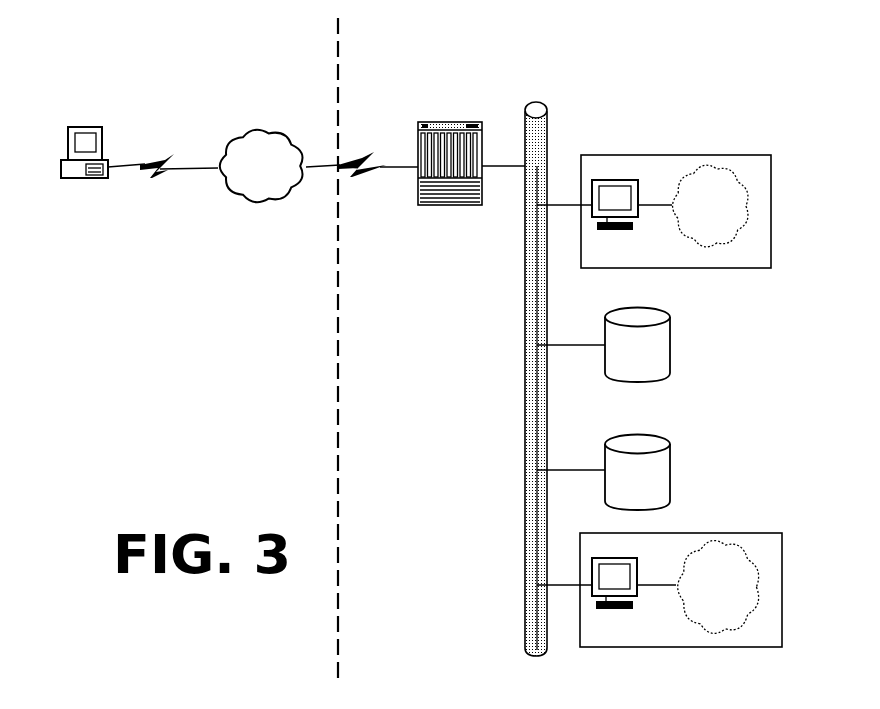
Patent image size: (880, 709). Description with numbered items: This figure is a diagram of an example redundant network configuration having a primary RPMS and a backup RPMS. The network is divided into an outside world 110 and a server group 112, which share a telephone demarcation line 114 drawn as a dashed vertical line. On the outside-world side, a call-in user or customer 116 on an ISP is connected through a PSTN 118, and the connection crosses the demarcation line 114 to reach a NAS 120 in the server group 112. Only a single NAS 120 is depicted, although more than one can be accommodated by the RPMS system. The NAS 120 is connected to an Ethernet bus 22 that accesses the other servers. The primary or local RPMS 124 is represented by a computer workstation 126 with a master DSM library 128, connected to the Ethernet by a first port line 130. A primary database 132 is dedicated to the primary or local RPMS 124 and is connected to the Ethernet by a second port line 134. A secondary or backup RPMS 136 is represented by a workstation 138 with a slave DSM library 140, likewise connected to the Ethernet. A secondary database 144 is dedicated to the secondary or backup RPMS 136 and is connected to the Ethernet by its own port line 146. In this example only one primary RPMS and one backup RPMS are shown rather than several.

The outside world 110 is at (210, 82).
The server group 112 is at (628, 80).
The telephone demarcation line 114 is at (338, 334).
The call-in user or customer 116 is at (102, 126).
The PSTN 118 is at (283, 205).
The NAS 120 is at (414, 196).
The network bus 22 is at (525, 403).
The primary or local RPMS 124 is at (712, 155).
The computer workstation 126 is at (640, 197).
The master DSM library 128 is at (734, 236).
The first port line 130 is at (565, 202).
The primary database 132 is at (672, 358).
The second port line 134 is at (560, 345).
The secondary database 144 is at (672, 483).
The port line 146 is at (560, 470).
The secondary or backup RPMS 136 is at (690, 563).
The workstation 138 is at (638, 588).
The slave DSM library 140 is at (733, 618).